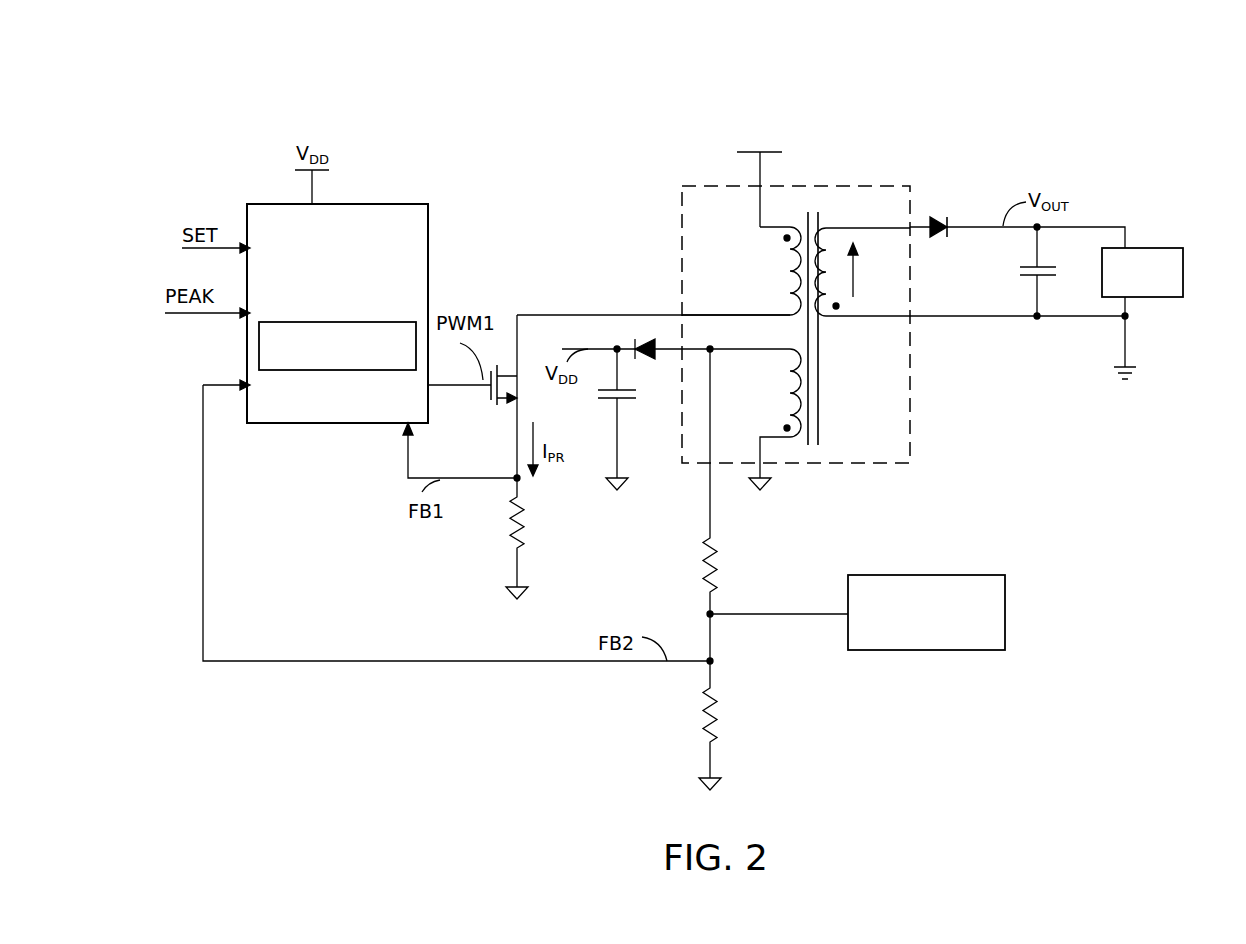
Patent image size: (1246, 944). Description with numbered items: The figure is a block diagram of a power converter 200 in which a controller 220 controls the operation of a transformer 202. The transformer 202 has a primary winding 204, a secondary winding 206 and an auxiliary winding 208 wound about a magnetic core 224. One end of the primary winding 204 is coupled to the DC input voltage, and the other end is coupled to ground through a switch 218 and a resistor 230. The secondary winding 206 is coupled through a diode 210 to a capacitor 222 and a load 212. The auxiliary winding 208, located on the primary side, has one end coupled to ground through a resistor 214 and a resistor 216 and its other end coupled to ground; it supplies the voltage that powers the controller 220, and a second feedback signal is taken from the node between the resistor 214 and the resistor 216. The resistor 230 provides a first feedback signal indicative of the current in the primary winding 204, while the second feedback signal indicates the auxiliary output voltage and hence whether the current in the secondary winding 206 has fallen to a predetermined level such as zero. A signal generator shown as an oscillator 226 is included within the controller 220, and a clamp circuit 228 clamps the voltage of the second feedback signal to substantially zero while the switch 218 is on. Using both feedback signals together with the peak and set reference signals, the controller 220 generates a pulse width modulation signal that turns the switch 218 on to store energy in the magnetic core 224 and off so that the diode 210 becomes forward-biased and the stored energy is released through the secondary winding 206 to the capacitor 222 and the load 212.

The power converter 200 is at (568, 114).
The transformer 202 is at (680, 260).
The primary winding 204 is at (793, 293).
The secondary winding 206 is at (832, 227).
The auxiliary winding 208 is at (793, 415).
The diode 210 is at (947, 223).
The load 212 is at (1160, 247).
The resistor 214 is at (718, 580).
The resistor 216 is at (718, 726).
The switch 218 is at (488, 392).
The controller 220 is at (373, 204).
The capacitor 222 is at (1032, 265).
The magnetic core 224 is at (820, 408).
The oscillator 226 is at (370, 322).
The clamp circuit 228 is at (928, 575).
The resistor 230 is at (526, 537).